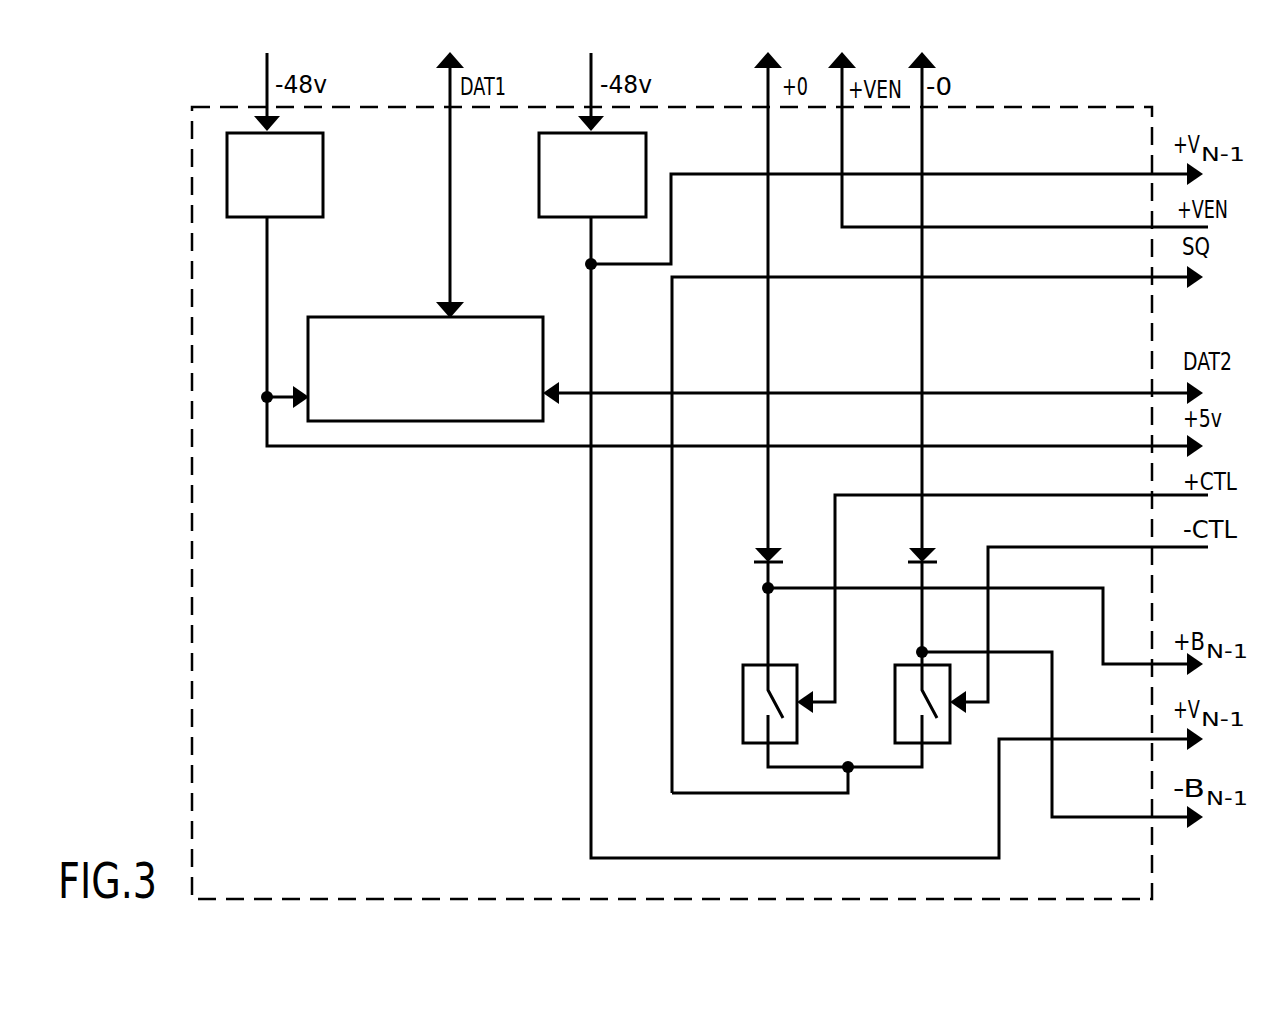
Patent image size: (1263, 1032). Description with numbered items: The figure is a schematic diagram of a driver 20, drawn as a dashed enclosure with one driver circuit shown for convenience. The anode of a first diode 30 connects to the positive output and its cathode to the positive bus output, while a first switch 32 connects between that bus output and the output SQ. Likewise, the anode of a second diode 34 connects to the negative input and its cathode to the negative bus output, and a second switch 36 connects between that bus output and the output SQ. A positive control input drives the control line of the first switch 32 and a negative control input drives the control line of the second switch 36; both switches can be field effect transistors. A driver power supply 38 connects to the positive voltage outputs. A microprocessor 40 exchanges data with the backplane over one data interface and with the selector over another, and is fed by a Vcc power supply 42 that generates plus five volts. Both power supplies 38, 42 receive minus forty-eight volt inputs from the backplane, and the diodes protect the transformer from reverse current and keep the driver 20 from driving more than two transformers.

The driver 20 is at (437, 870).
The first diode D1 30 is at (752, 597).
The switch SW1 32 is at (754, 689).
The second diode D2 34 is at (905, 597).
The switch SW2 36 is at (908, 689).
The driver power supply 38 is at (646, 148).
The microprocessor 40 is at (440, 408).
The Vcc power supply 42 is at (323, 164).